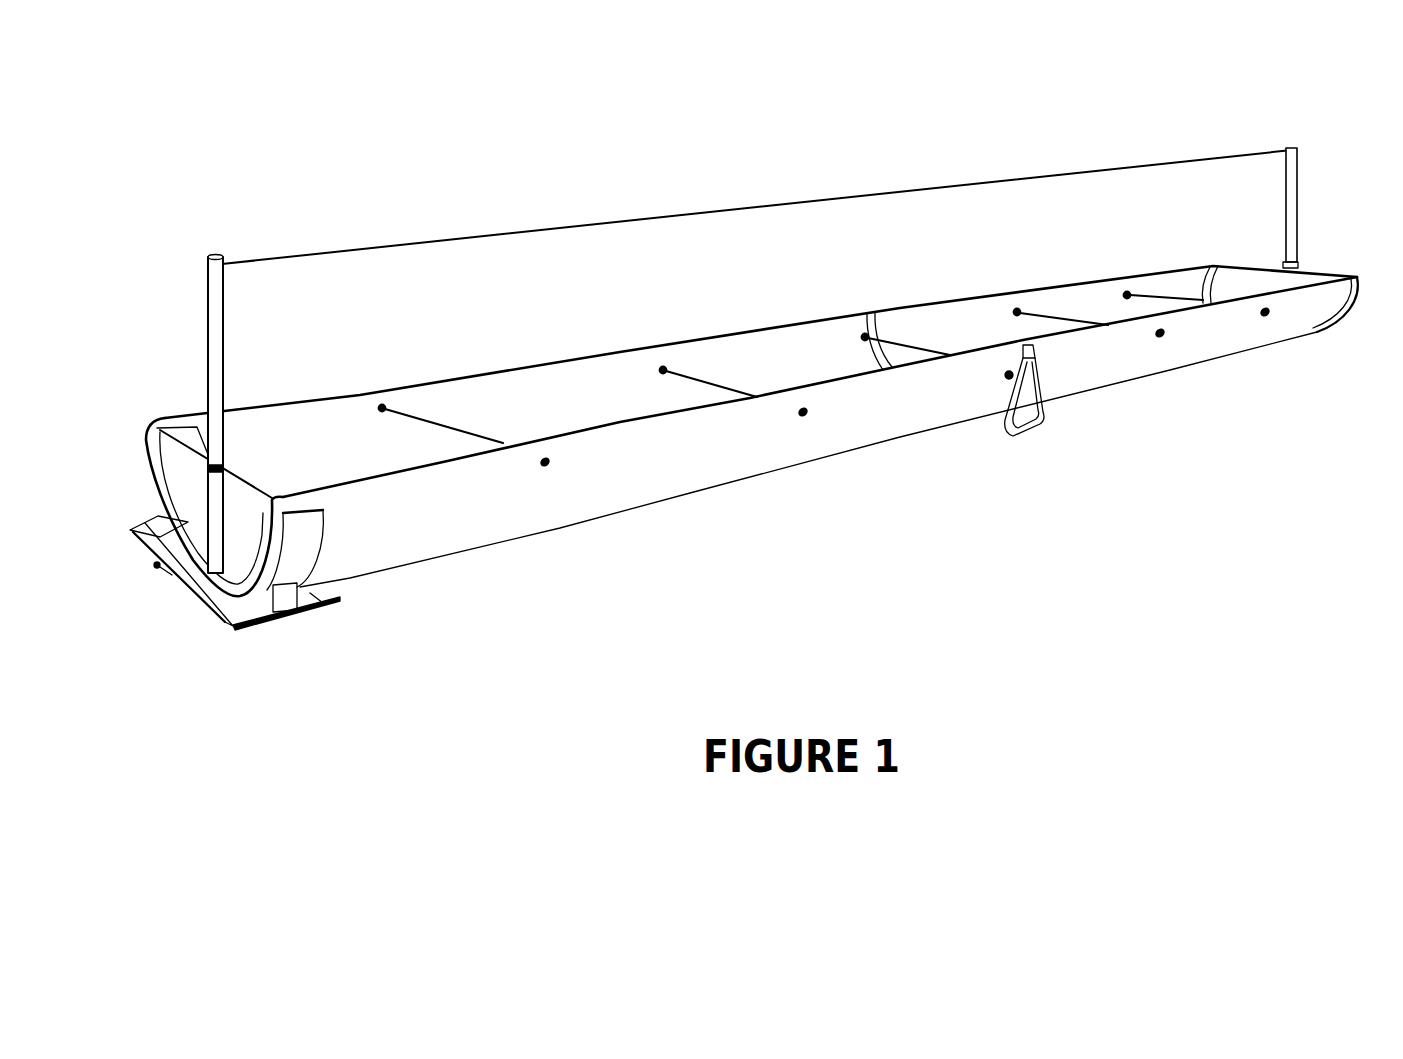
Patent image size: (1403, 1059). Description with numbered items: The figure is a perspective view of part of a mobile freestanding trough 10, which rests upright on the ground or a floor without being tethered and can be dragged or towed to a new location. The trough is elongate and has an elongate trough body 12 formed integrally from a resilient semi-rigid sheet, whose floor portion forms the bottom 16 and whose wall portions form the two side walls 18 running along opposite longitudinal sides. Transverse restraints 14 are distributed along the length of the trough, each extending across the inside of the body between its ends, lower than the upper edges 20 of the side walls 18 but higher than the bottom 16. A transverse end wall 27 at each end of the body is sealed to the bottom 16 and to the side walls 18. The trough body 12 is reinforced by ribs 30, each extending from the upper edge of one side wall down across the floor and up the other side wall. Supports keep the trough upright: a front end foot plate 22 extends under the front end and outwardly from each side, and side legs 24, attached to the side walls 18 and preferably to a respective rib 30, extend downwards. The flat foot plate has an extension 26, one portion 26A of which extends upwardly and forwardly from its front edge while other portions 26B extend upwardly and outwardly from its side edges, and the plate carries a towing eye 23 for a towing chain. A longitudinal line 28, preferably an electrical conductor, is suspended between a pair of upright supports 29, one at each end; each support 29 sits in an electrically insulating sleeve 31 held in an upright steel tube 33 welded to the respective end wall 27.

The mobile freestanding trough 10 is at (836, 518).
The trough body 12 is at (680, 478).
The transverse restraints 14 is at (687, 377).
The bottom 16 is at (460, 553).
The trough side walls 18 is at (811, 395).
The upper edges 20 is at (830, 382).
The front end foot plate 22 is at (315, 598).
The towing eye 23 is at (157, 567).
The side legs 24 is at (1043, 433).
The extension 26 is at (132, 545).
The extension portion 26A is at (203, 605).
The extension portions 26B is at (157, 528).
The transverse end wall 27 is at (150, 420).
The line 28 is at (487, 237).
The upright supports 29 is at (215, 340).
The ribs 30 is at (320, 530).
The electrically insulating sleeve 31 is at (173, 450).
The steel tube 33 is at (213, 500).